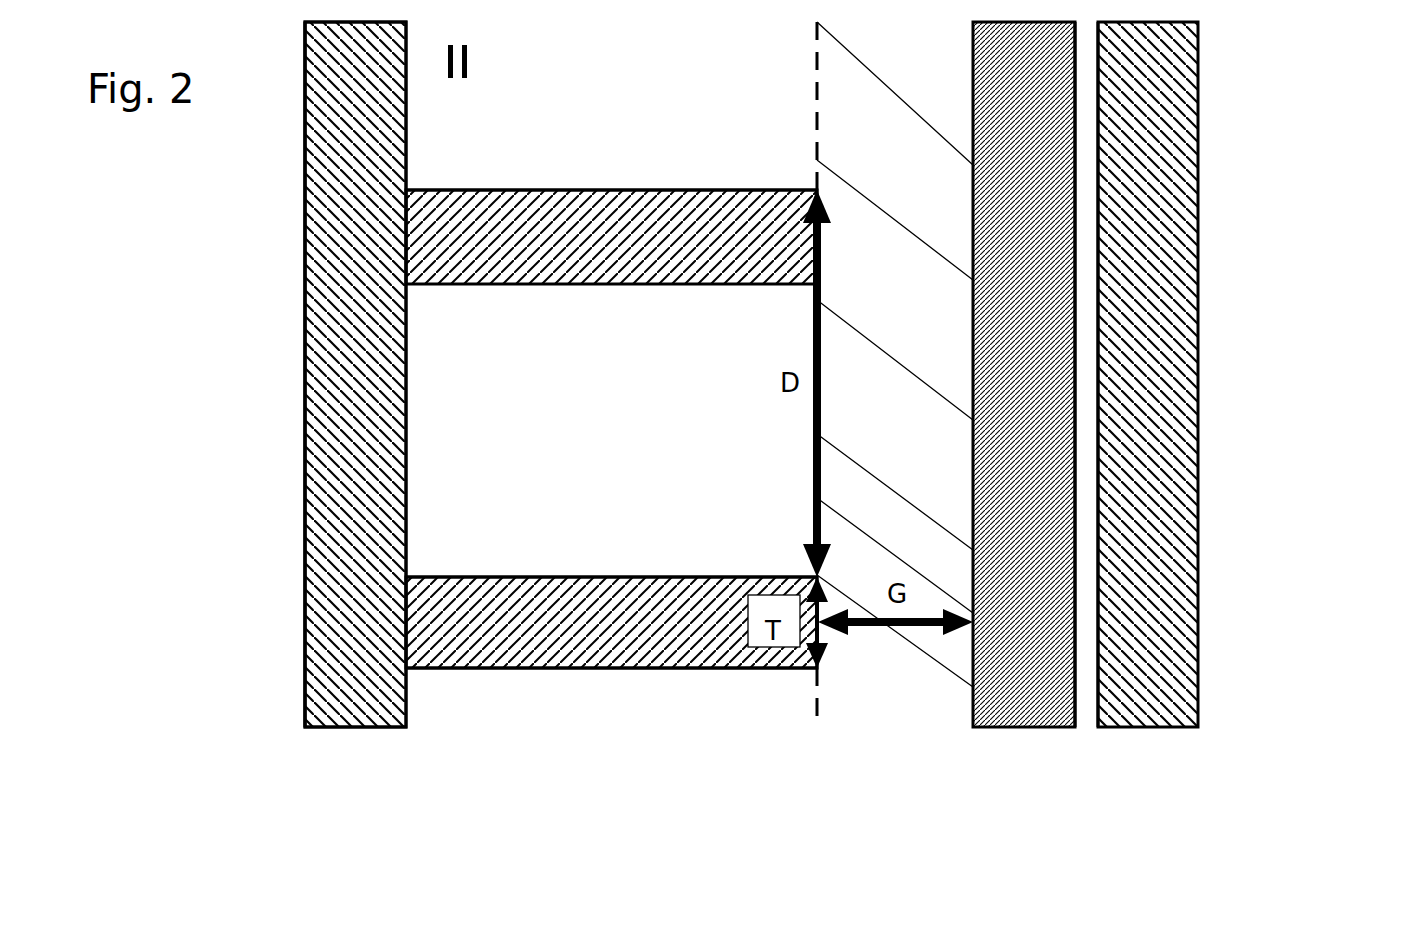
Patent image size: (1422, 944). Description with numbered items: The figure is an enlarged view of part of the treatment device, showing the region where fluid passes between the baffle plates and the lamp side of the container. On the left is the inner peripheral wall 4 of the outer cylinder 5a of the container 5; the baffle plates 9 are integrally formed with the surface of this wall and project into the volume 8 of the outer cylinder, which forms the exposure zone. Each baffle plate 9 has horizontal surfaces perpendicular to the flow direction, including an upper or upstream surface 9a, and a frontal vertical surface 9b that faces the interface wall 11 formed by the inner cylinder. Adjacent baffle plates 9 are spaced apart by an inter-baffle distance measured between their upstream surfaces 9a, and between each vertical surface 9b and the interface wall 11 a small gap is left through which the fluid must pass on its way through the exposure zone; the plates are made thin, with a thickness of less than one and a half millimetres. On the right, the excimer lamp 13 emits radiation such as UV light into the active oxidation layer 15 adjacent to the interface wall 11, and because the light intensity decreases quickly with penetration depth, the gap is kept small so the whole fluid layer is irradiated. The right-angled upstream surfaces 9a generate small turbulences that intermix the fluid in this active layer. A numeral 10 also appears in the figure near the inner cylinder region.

The inner peripheral wall 4 is at (407, 480).
The container 5 is at (367, 410).
The outer cylinder 5a is at (337, 127).
The volume 8 is at (515, 730).
The baffle plate 9 is at (458, 227).
The upstream surface 9a is at (450, 190).
The vertical surface 9b is at (820, 248).
The gap 10 is at (1088, 731).
The interface wall 11 is at (1033, 520).
The excimer lamp 13 is at (1145, 240).
The active oxidation layer 15 is at (852, 137).